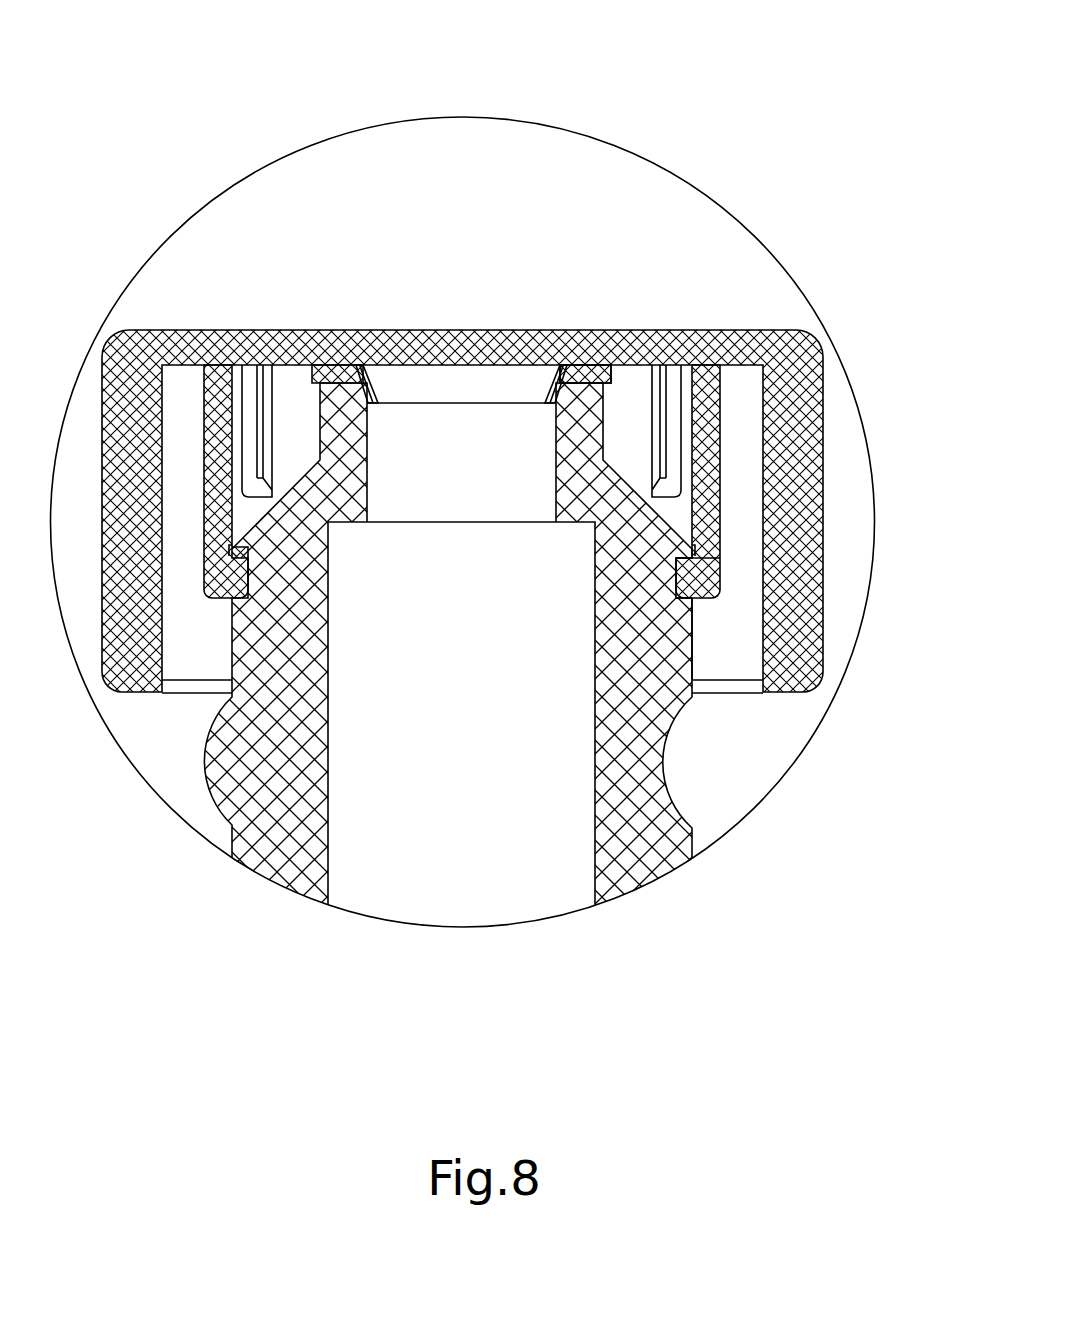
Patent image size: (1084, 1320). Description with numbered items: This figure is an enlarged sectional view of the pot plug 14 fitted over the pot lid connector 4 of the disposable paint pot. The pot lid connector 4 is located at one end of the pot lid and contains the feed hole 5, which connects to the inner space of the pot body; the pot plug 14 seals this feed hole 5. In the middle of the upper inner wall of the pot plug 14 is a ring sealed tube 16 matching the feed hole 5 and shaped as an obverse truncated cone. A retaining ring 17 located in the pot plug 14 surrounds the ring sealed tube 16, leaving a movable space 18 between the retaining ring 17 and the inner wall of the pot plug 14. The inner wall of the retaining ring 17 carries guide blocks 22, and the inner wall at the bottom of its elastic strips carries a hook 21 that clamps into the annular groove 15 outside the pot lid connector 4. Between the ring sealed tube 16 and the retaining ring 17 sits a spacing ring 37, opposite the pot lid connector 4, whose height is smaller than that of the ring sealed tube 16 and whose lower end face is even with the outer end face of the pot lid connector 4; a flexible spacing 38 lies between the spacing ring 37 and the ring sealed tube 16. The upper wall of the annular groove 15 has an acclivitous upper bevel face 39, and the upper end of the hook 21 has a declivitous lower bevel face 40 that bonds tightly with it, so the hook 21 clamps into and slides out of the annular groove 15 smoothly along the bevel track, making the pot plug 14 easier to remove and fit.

The pot lid connector 4 is at (625, 822).
The feed hole 5 is at (443, 435).
The pot plug 14 is at (804, 536).
The annular groove 15 is at (700, 582).
The ring sealed tube 16 is at (549, 383).
The retaining ring 17 is at (713, 408).
The movable space 18 is at (742, 457).
The hook 21 is at (695, 568).
The guide block 22 is at (660, 407).
The spacing ring 37 is at (596, 370).
The flexible spacing 38 is at (567, 382).
The upper bevel face 39 is at (717, 563).
The lower bevel face 40 is at (705, 565).